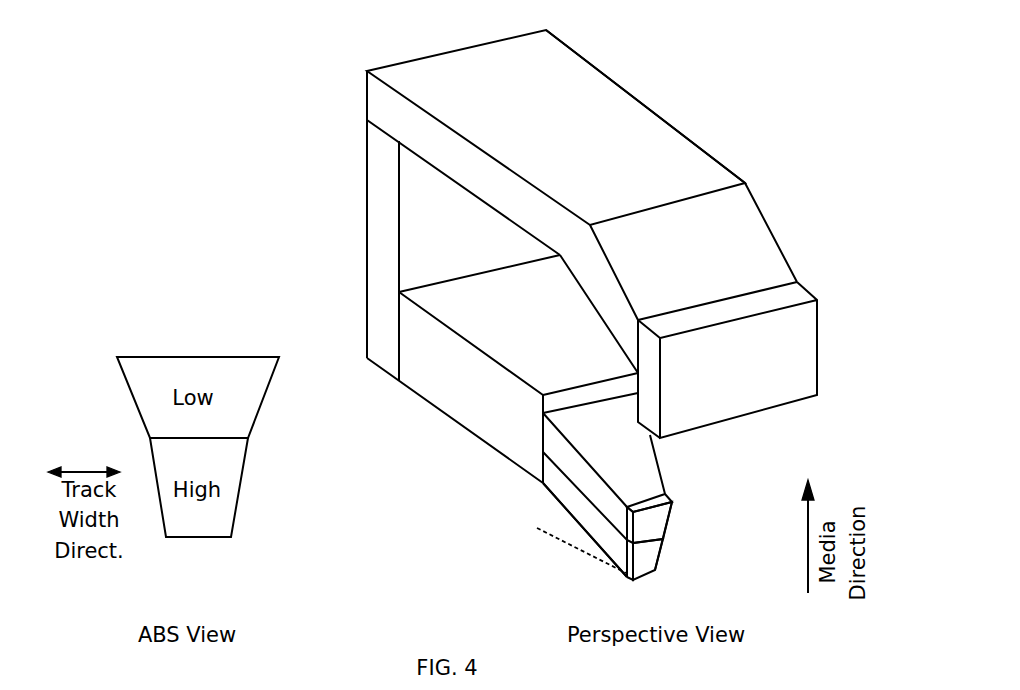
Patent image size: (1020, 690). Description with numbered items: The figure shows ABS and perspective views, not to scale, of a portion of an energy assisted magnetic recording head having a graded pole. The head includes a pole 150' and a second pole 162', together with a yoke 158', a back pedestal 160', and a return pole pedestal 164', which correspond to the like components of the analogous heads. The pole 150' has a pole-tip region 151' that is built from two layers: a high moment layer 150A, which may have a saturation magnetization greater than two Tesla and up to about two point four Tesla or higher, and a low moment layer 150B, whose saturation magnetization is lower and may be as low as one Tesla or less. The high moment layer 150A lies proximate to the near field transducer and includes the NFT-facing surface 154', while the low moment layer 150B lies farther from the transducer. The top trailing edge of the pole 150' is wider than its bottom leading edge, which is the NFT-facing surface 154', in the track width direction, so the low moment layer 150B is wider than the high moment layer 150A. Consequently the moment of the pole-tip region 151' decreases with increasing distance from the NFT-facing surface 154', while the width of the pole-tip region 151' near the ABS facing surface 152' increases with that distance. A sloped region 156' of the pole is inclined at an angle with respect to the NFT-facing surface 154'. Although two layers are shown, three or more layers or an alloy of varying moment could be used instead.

The pole 150' is at (405, 452).
The high moment layer 150A is at (238, 493).
The low moment layer 150B is at (132, 398).
The pole-tip region 151' is at (705, 473).
The ABS facing surface 152' is at (699, 536).
The NFT-facing surface 154' is at (371, 549).
The sloped region 156' is at (556, 550).
The yoke 158' is at (491, 369).
The back pedestal 160' is at (356, 226).
The pole 162' is at (671, 201).
The return pole pedestal 164' is at (749, 334).